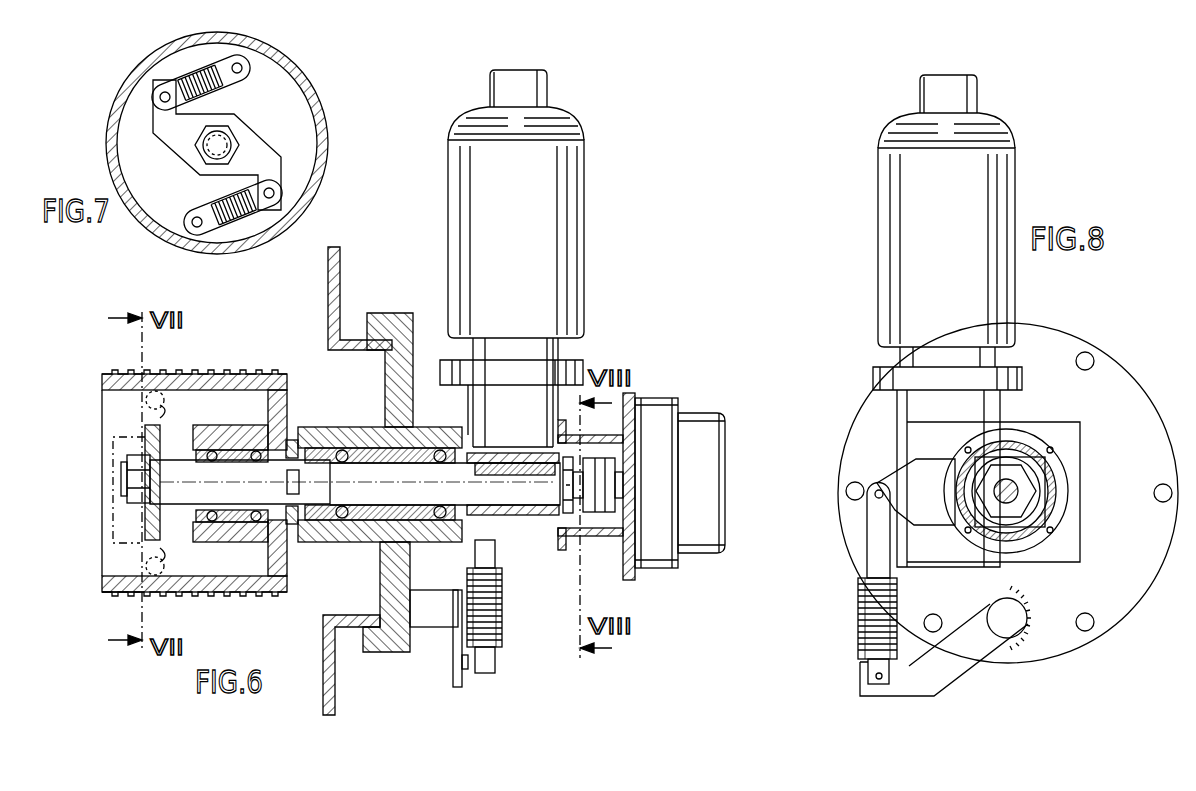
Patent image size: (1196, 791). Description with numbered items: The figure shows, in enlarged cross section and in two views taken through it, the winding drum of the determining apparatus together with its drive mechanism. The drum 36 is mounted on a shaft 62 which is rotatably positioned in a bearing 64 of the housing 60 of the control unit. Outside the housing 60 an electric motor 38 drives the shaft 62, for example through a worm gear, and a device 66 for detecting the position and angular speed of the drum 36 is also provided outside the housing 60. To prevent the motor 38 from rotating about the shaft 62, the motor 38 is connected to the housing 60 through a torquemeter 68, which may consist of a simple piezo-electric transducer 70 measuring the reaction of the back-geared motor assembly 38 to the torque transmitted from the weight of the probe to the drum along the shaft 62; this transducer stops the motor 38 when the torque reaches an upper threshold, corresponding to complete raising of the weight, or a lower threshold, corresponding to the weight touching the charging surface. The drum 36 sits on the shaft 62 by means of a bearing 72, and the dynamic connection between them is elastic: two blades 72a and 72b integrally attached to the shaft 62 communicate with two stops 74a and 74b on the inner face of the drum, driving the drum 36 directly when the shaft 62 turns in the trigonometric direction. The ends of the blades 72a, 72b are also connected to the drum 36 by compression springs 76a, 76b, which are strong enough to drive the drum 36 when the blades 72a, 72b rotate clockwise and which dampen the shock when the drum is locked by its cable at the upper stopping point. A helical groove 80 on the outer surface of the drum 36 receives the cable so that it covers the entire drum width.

In FIG. 7, the drum 36 is at (150, 66).
In FIG. 6, the drum 36 is at (84, 553).
In FIG. 6, the electric motor 38 is at (509, 236).
In FIG. 8, the electric motor 38 is at (931, 228).
In FIG. 6, the housing 60 is at (340, 300).
In FIG. 7, the shaft 62 is at (246, 118).
In FIG. 6, the shaft 62 is at (150, 492).
In FIG. 6, the bearing 64 is at (333, 542).
In FIG. 6, the device for detecting position and angular speed 66 is at (665, 405).
In FIG. 6, the torquemeter 68 is at (435, 647).
In FIG. 8, the torquemeter 68 is at (846, 660).
In FIG. 6, the piezo-electric transducer 70 is at (500, 650).
In FIG. 8, the piezo-electric transducer 70 is at (862, 606).
In FIG. 6, the bearing 72 is at (234, 428).
In FIG. 7, the blade 72a is at (153, 133).
In FIG. 7, the blade 72b is at (283, 158).
In FIG. 7, the stop 74a is at (146, 103).
In FIG. 7, the stop 74b is at (290, 187).
In FIG. 7, the compression spring 76a is at (226, 94).
In FIG. 7, the compression spring 76b is at (290, 211).
In FIG. 6, the helical groove 80 is at (106, 598).